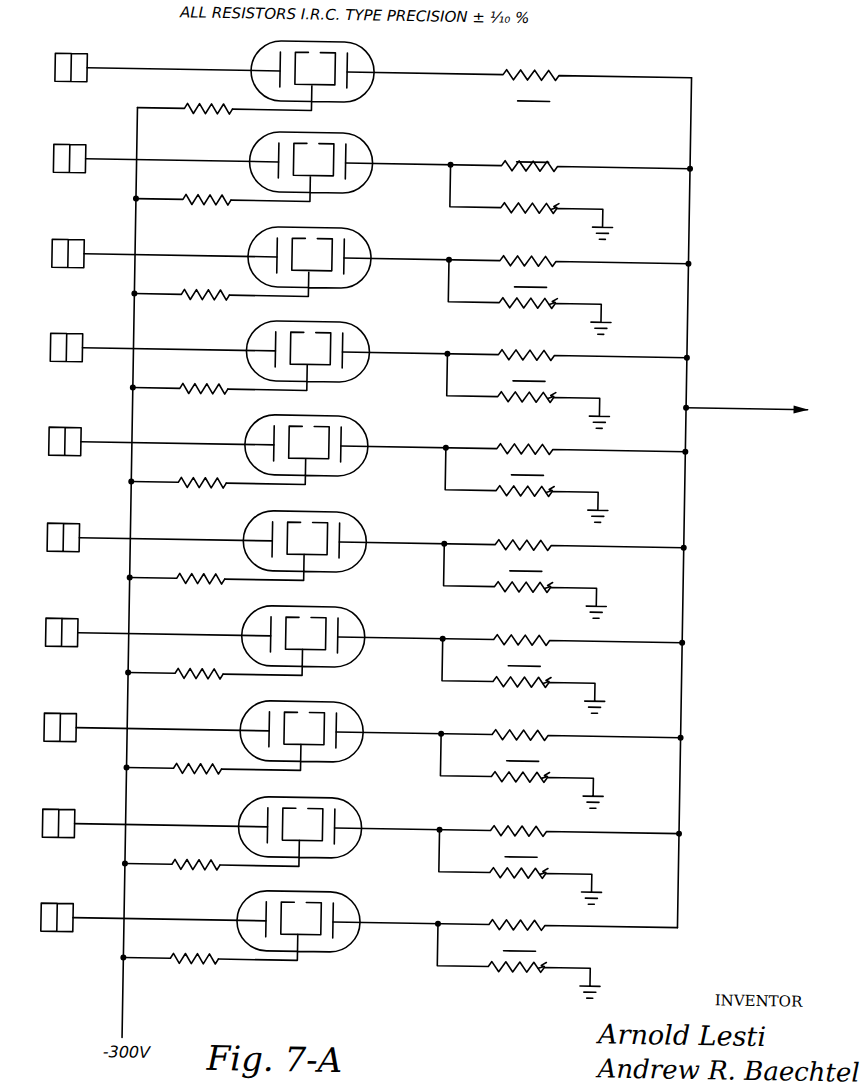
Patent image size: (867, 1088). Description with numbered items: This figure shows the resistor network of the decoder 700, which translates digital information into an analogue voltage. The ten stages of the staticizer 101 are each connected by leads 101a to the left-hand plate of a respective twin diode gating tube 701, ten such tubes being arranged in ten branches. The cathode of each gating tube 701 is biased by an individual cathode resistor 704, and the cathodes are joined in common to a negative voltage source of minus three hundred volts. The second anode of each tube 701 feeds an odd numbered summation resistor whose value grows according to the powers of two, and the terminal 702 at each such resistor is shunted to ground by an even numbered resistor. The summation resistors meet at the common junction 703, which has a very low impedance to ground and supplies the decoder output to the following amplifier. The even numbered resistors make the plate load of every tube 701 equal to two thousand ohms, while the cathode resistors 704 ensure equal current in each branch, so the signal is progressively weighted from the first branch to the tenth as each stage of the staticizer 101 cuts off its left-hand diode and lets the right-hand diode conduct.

The staticizer 101 is at (81, 908).
The leads 101a is at (100, 840).
The decoder 700 is at (568, 515).
The gating tube 701 is at (363, 58).
The resistor output tap 702 is at (551, 168).
The common junction 703 is at (731, 402).
The cathode resistor 704 is at (203, 981).